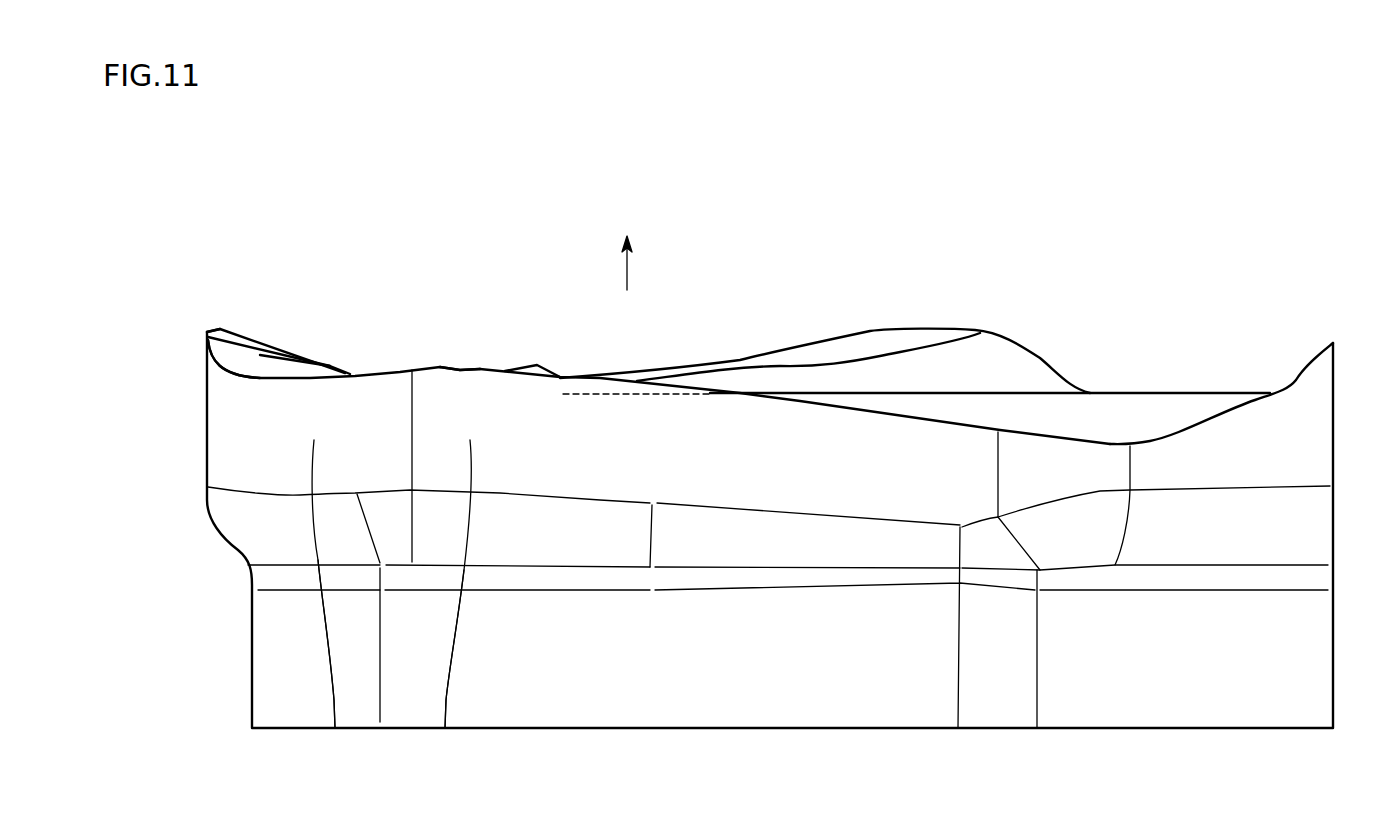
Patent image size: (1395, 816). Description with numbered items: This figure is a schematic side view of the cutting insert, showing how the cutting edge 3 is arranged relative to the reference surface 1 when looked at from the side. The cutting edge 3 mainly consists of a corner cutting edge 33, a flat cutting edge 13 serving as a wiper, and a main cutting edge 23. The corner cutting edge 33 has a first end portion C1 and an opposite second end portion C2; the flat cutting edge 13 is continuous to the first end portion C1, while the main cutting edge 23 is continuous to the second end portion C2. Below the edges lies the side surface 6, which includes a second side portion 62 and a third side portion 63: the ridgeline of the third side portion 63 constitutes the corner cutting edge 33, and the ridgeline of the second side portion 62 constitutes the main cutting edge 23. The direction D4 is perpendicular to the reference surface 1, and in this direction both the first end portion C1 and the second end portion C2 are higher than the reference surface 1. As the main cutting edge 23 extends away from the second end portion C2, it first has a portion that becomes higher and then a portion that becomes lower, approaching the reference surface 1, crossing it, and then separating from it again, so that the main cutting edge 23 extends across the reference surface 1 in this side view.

The reference surface 1 is at (1140, 393).
The cutting edge 3 is at (475, 268).
The flat cutting edge 13 is at (207, 340).
The first end portion C1 is at (208, 364).
The corner cutting edge 33 is at (303, 378).
The second end portion C2 is at (412, 365).
The main cutting edge 23 is at (473, 370).
The direction D4 is at (625, 268).
The side surface 6 is at (462, 777).
The third side portion 63 is at (335, 728).
The second side portion 62 is at (445, 728).